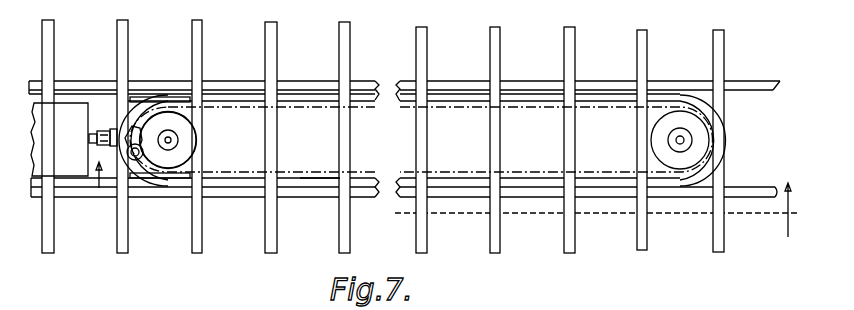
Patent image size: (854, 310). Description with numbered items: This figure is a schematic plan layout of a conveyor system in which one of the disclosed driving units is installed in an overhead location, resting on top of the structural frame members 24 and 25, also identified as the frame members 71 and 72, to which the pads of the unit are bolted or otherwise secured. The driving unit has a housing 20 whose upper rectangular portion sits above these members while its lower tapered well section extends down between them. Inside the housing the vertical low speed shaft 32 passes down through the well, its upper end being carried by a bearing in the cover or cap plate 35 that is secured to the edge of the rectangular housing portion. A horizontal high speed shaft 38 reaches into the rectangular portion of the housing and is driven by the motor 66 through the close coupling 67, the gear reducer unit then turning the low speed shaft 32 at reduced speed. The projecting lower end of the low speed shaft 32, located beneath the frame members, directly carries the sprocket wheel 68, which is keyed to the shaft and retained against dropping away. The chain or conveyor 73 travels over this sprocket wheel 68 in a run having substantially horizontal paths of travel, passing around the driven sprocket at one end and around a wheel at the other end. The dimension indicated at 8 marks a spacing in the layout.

The dimension arrow 8 is at (450, 199).
The housing 20 is at (196, 114).
The structural frame member 24 is at (120, 44).
The structural frame member 25 is at (200, 41).
The low speed shaft 32 is at (172, 141).
The cover or cap plate 35 is at (167, 160).
The high speed shaft 38 is at (110, 129).
The motor 66 is at (59, 139).
The close coupling 67 is at (101, 130).
The sprocket wheel 68 is at (145, 155).
The structural frame member 71 is at (144, 136).
The structural frame member 72 is at (221, 136).
The chain or conveyor 73 is at (317, 168).